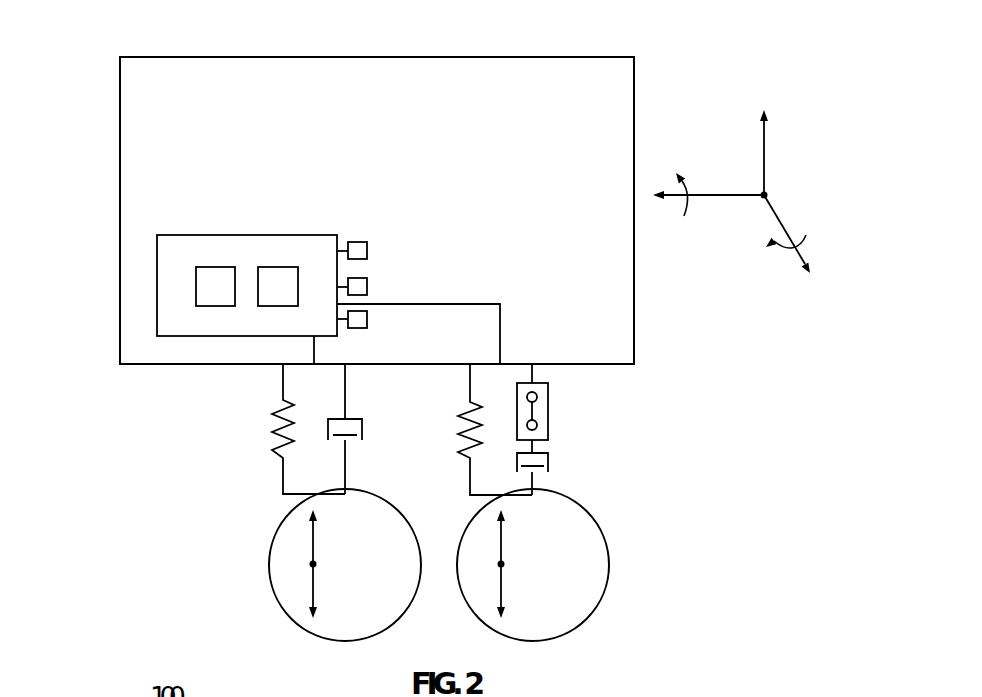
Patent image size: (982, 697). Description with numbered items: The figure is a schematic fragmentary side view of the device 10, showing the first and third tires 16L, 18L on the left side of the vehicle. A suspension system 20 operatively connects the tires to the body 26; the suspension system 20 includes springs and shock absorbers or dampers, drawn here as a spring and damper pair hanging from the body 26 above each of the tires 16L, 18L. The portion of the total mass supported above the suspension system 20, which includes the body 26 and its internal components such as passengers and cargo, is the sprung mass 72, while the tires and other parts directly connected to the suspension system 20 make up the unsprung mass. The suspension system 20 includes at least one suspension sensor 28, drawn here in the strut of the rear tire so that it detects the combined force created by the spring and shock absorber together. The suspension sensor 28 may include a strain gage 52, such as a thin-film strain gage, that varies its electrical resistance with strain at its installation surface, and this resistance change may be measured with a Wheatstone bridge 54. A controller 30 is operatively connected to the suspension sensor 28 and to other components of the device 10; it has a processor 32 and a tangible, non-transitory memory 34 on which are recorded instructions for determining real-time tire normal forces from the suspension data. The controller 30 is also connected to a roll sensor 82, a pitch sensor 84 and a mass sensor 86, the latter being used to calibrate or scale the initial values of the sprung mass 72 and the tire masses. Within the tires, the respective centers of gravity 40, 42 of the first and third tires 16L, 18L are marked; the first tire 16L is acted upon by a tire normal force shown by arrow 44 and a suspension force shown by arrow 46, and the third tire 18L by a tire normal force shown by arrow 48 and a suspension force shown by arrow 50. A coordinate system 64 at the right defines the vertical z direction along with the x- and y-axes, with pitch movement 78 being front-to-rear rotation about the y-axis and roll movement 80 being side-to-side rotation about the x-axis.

The device 10 is at (582, 19).
The body 26 is at (148, 57).
The sprung mass 72 is at (98, 219).
The controller 30 is at (172, 235).
The processor 32 is at (210, 267).
The memory 34 is at (272, 267).
The roll sensor 82 is at (367, 251).
The pitch sensor 84 is at (367, 287).
The mass sensor 86 is at (367, 319).
The suspension system 20 is at (229, 438).
The suspension sensor 28 is at (548, 393).
The strain gage 52 is at (537, 398).
The Wheatstone bridge 54 is at (537, 426).
The first tire 16L is at (254, 519).
The third tire 18L is at (441, 519).
The center of gravity 40 is at (315, 564).
The center of gravity 42 is at (503, 564).
The arrow 44 is at (315, 530).
The arrow 46 is at (313, 595).
The arrow 48 is at (503, 530).
The arrow 50 is at (501, 595).
The coordinate system origin 64 is at (768, 194).
The pitch movement 78 is at (793, 233).
The roll movement 80 is at (688, 186).